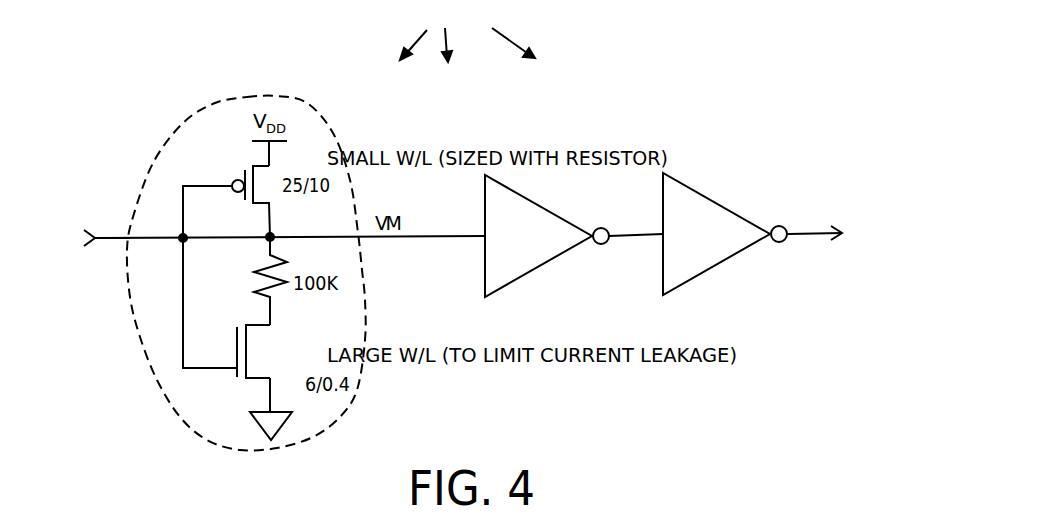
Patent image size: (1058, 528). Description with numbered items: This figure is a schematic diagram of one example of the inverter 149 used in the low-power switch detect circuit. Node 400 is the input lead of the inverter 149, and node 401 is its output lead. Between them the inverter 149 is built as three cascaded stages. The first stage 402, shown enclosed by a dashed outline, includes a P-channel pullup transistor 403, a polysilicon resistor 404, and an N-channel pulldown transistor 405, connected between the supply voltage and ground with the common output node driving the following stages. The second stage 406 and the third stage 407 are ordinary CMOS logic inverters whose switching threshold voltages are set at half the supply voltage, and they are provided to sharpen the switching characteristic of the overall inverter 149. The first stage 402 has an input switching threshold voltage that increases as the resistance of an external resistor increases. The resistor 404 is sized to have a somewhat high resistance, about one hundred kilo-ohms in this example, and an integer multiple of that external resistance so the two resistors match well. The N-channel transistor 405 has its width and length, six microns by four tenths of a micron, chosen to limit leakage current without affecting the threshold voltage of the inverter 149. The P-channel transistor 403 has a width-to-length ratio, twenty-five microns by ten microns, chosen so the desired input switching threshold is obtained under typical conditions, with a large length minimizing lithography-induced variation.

The inverter 149 is at (467, 34).
The node 400 is at (104, 236).
The node 401 is at (815, 232).
The first stage 402 is at (189, 122).
The P-channel pullup transistor 403 is at (245, 170).
The polysilicon resistor 404 is at (258, 272).
The N-channel pulldown transistor 405 is at (265, 338).
The second stage 406 is at (548, 208).
The third stage 407 is at (720, 205).